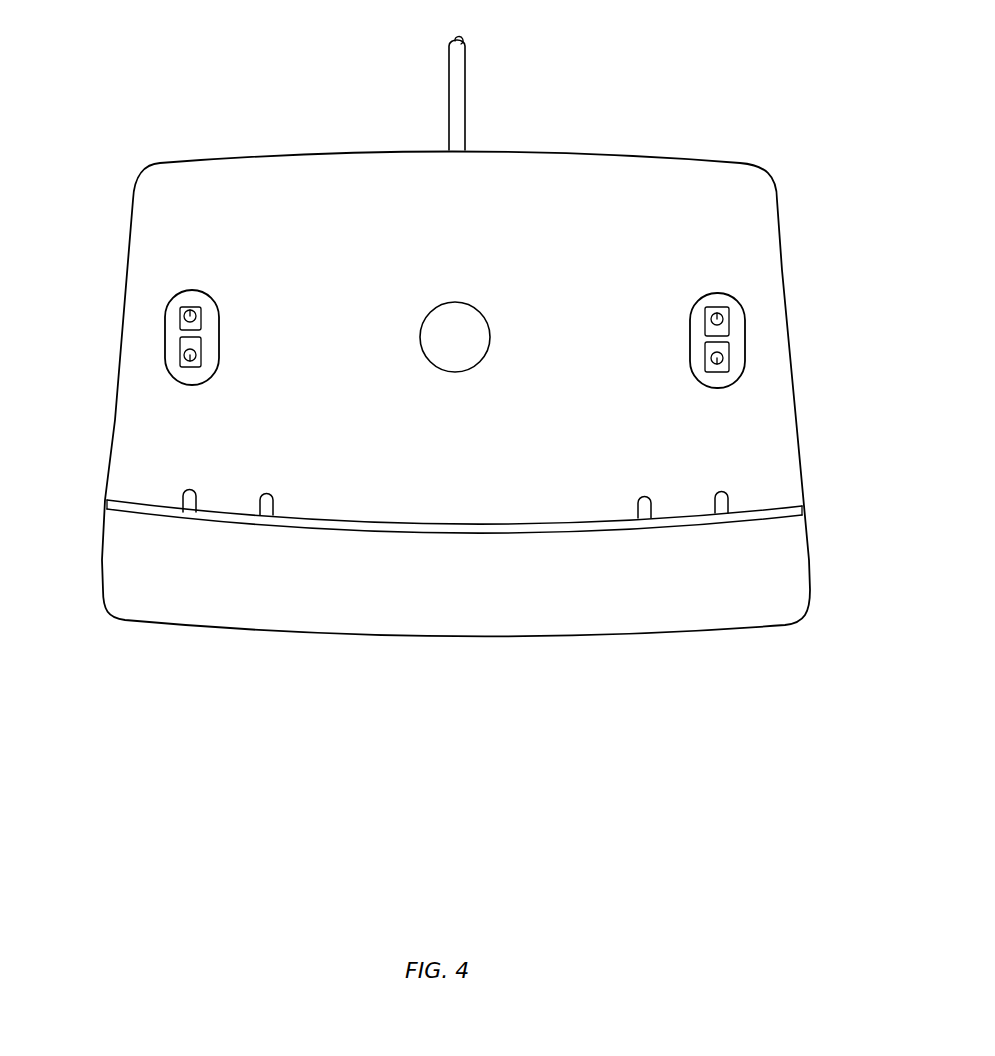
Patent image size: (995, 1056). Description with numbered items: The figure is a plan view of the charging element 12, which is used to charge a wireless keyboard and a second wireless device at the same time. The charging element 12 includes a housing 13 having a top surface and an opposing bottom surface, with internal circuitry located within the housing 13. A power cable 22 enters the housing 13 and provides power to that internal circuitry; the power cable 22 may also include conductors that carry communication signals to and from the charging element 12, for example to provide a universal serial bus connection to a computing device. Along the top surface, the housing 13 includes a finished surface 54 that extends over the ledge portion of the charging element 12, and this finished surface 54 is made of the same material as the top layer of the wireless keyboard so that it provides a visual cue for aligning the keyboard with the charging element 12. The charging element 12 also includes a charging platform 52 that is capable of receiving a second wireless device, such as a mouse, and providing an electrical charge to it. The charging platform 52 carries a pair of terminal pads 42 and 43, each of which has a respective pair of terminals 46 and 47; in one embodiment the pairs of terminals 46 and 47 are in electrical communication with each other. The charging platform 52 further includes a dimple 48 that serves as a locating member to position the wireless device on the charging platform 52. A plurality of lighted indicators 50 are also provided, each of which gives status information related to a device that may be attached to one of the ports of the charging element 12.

The charging element 12 is at (231, 663).
The housing 13 is at (786, 489).
The power cable 22 is at (457, 60).
The terminal pad 42 is at (172, 328).
The terminal pad 43 is at (738, 337).
The terminals 46 is at (190, 310).
The terminals 47 is at (718, 318).
The dimple 48 is at (469, 350).
The lighted indicators 50 is at (267, 495).
The charging platform 52 is at (607, 263).
The finished surface 54 is at (421, 610).